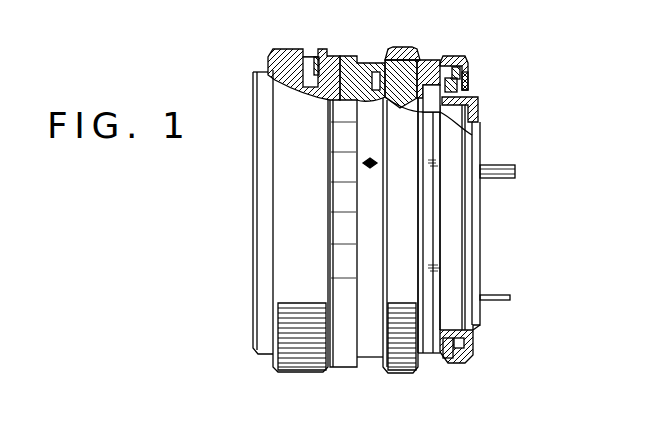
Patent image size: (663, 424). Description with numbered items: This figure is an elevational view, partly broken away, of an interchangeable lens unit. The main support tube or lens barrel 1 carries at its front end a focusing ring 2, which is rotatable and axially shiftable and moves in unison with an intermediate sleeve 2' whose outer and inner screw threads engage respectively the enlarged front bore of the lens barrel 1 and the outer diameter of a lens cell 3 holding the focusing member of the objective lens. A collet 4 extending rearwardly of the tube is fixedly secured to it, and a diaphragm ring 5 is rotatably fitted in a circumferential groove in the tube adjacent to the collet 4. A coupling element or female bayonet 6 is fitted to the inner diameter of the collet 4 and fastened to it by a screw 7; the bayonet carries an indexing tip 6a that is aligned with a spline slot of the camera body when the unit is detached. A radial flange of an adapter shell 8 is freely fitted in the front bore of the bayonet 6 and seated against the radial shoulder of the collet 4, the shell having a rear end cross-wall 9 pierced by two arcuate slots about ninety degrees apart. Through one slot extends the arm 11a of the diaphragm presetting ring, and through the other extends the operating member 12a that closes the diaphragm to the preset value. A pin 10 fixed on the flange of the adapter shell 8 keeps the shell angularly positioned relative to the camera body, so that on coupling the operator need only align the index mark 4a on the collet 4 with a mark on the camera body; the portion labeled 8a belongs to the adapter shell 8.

The lens barrel 1 is at (366, 63).
The focusing ring 2 is at (285, 202).
The intermediate sleeve 2' is at (313, 47).
The lens cell 3 is at (320, 101).
The collet 4 is at (430, 64).
The index mark 4a is at (452, 56).
The diaphragm ring 5 is at (401, 48).
The female bayonet 6 is at (470, 79).
The indexing tip 6a is at (468, 72).
The screw 7 is at (456, 362).
The adapter shell 8 is at (457, 116).
The sleeve flange 8a is at (478, 322).
The rear end cross-wall 9 is at (481, 119).
The pin 10 is at (470, 91).
The arm of the presetting ring 11a is at (518, 172).
The operating member 12a is at (496, 300).